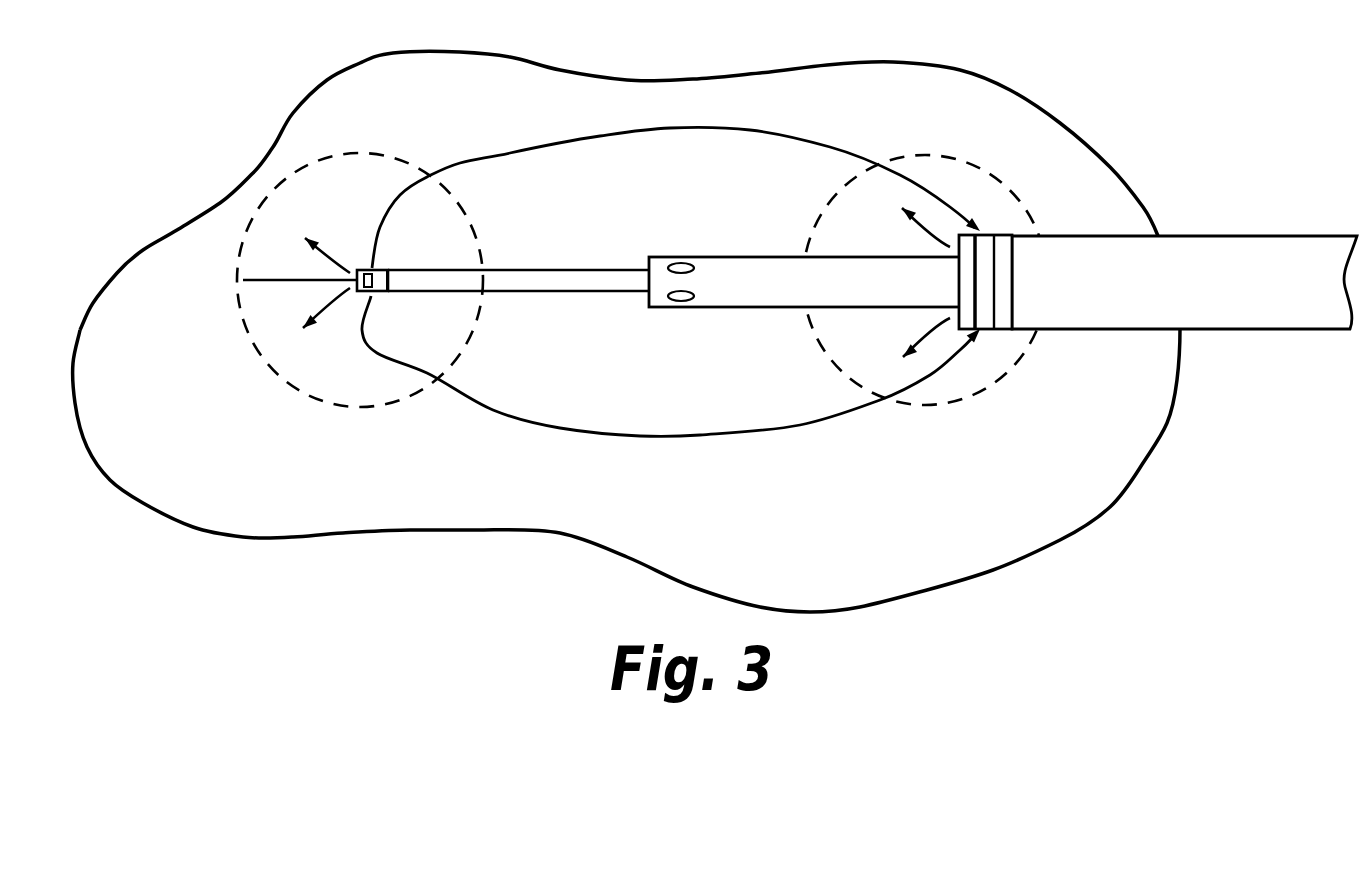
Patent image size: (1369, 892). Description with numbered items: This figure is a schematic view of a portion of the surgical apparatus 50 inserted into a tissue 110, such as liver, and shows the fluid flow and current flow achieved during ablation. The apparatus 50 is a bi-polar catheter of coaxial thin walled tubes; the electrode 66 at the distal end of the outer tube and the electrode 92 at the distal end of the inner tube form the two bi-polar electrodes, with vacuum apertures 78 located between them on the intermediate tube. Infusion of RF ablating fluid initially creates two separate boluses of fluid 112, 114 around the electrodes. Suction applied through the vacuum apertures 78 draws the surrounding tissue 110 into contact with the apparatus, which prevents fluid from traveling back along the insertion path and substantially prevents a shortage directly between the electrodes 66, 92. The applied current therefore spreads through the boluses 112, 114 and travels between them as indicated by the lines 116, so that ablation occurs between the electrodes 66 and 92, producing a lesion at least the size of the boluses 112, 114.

The surgical apparatus 50 is at (1207, 235).
The electrode 66 is at (1012, 255).
The vacuum apertures 78 is at (680, 263).
The electrode 92 is at (367, 290).
The tissue 110 is at (287, 130).
The bolus of fluid 112 is at (395, 158).
The bolus of fluid 114 is at (963, 403).
The lines 116 is at (833, 145).